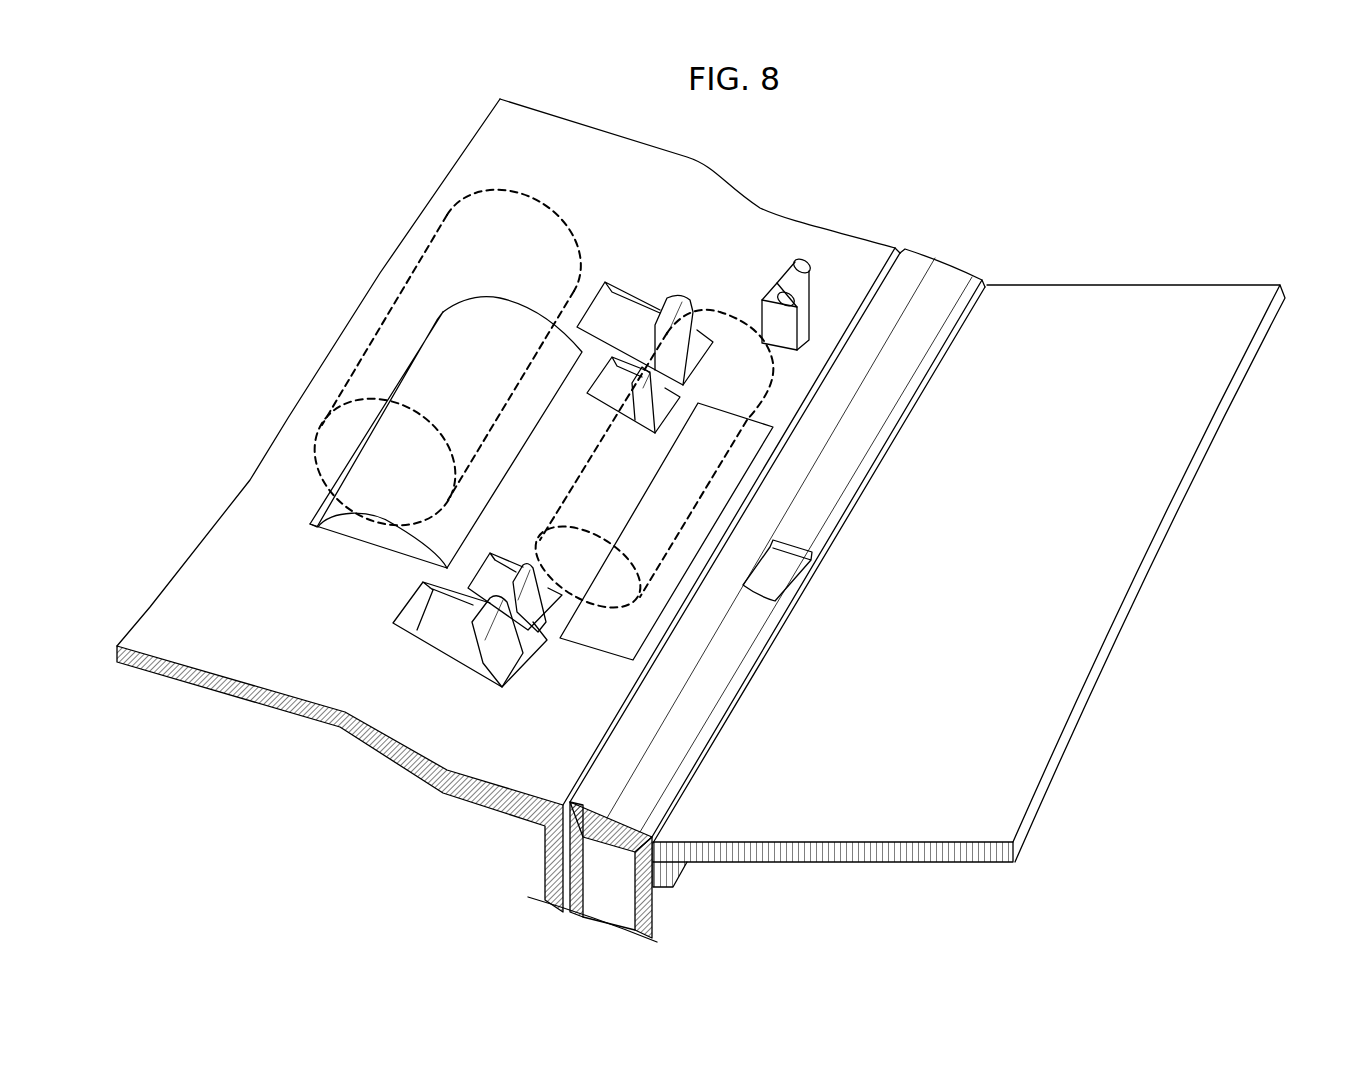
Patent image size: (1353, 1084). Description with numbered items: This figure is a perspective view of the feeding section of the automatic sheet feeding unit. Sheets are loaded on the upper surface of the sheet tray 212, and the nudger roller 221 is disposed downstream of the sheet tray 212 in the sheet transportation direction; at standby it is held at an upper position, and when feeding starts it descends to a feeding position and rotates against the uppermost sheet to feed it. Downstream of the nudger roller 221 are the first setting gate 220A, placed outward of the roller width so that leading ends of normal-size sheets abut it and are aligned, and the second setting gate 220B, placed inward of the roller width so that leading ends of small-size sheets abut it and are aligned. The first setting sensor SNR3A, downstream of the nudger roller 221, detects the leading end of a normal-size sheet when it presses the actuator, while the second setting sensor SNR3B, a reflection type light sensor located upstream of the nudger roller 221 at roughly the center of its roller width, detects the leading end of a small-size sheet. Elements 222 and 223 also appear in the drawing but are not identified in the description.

The sheet tray 212 is at (1217, 294).
The first setting gate 220A is at (668, 327).
The second setting gate 220B is at (650, 372).
The nudger roller 221 is at (605, 598).
The cylindrical member 222 is at (345, 428).
The half cylindrical holder 223 is at (345, 527).
The first setting sensor SNR3A is at (810, 312).
The second setting sensor SNR3B is at (783, 580).